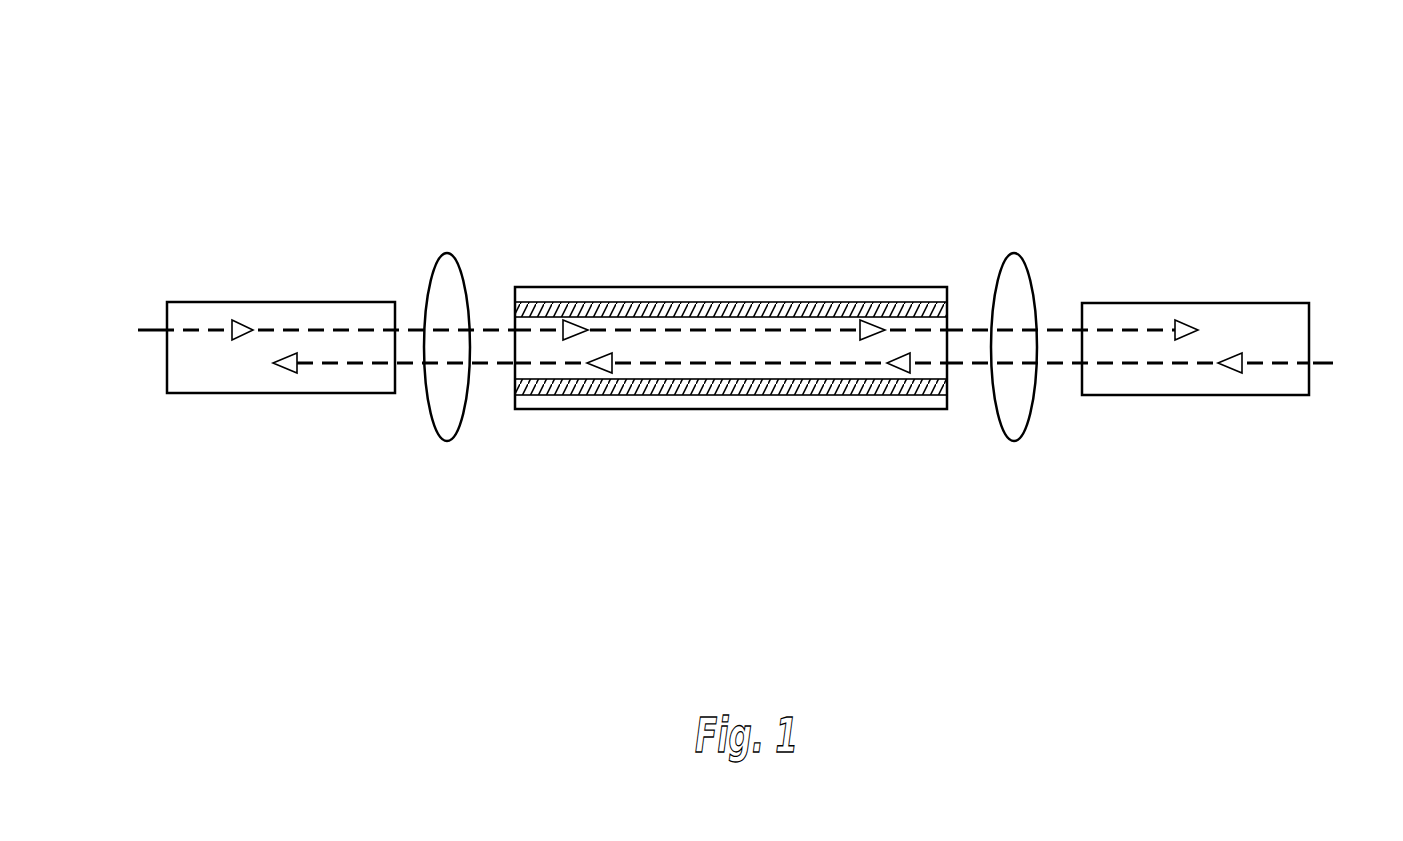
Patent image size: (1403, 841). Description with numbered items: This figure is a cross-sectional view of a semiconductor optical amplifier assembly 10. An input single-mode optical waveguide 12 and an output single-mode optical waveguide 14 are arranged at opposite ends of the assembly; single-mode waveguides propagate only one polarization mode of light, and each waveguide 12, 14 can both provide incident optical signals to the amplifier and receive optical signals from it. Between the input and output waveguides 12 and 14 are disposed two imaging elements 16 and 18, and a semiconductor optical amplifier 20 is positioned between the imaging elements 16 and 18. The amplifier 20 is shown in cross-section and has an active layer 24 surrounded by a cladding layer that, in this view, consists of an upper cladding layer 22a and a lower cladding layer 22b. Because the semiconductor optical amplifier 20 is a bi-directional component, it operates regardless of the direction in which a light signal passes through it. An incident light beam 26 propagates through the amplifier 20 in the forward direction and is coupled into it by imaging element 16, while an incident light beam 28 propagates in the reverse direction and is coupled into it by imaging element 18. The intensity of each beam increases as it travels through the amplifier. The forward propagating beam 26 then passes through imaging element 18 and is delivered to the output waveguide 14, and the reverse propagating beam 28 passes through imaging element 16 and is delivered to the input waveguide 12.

The laser system 10 is at (248, 135).
The first reflector / output coupler 12 is at (1215, 303).
The second reflector 14 is at (325, 302).
The first lens 16 is at (1002, 433).
The second lens 18 is at (430, 425).
The gain medium housing 20 is at (731, 363).
The first cladding layer 22a is at (563, 295).
The second cladding layer 22b is at (607, 403).
The gain medium core 24 is at (753, 352).
The output beam 26 is at (1327, 363).
The input beam 28 is at (148, 330).